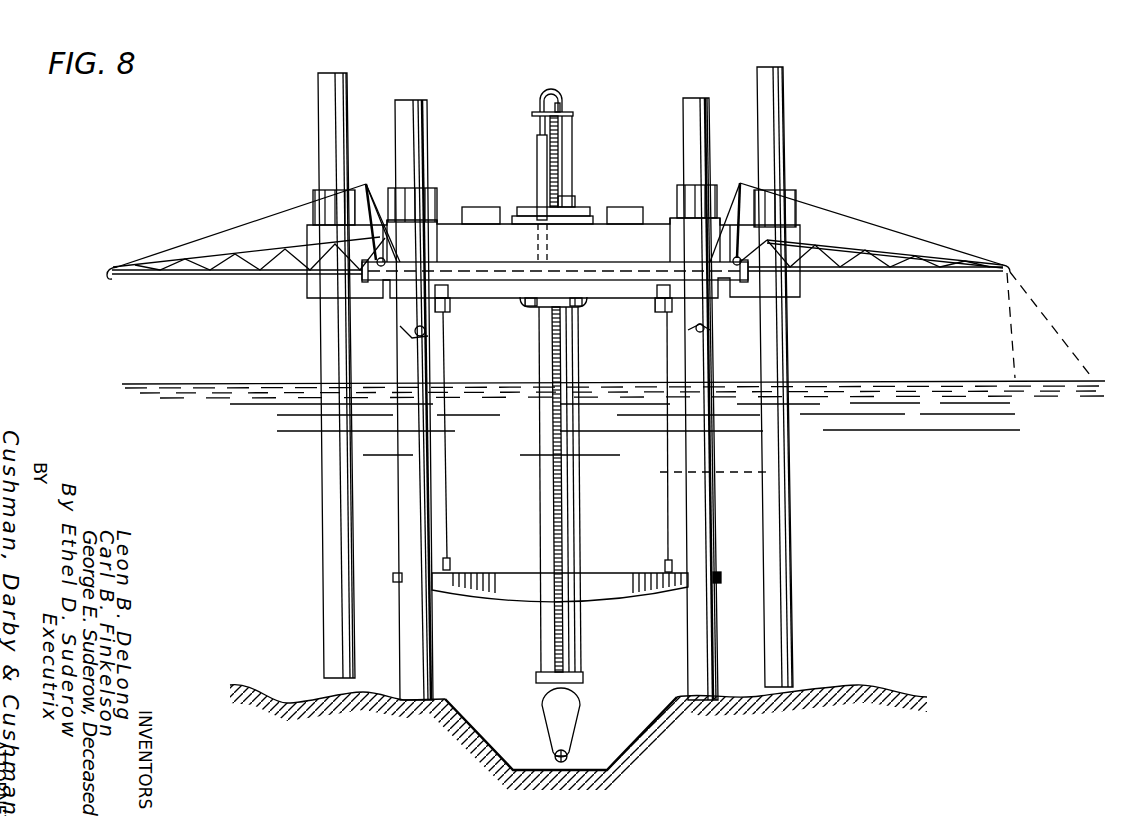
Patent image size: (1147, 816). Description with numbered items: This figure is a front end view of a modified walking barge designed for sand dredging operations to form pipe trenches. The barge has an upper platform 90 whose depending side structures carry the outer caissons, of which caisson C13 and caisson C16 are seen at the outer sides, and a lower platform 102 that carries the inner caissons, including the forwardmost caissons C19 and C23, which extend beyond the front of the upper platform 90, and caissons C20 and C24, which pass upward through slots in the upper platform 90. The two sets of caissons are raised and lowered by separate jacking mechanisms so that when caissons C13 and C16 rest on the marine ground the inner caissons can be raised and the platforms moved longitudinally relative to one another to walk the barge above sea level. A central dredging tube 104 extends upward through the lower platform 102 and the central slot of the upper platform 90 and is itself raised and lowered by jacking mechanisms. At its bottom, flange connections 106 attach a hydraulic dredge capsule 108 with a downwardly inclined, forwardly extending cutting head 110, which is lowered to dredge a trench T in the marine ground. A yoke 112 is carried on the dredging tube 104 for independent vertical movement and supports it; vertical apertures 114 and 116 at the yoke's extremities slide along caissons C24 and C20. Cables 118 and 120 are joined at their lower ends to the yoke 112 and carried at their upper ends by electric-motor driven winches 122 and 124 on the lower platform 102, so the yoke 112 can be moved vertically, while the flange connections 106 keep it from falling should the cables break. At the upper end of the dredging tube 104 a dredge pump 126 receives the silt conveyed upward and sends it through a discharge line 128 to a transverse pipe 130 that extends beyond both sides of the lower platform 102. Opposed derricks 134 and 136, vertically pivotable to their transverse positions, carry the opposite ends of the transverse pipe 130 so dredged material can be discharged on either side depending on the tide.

The upper platform 90 is at (652, 226).
The lower platform 102 is at (795, 279).
The central dredging tube 104 is at (570, 648).
The flange connections 106 is at (612, 492).
The hydraulic dredge capsule 108 is at (583, 695).
The cutting head 110 is at (565, 735).
The yoke 112 is at (600, 575).
The vertical aperture 114 is at (398, 583).
The vertical aperture 116 is at (712, 575).
The cable 118 is at (446, 497).
The cable 120 is at (668, 462).
The electric-motor driven winch 122 is at (452, 302).
The electric-motor driven winch 124 is at (650, 311).
The dredge pump 126 is at (543, 168).
The discharge line 128 is at (545, 112).
The transverse pipe 130 is at (280, 275).
The derrick 134 is at (915, 263).
The derrick 136 is at (210, 268).
The caisson C13 is at (782, 560).
The caisson C16 is at (330, 590).
The caisson C19 is at (706, 318).
The caisson C20 is at (712, 645).
The caisson C23 is at (408, 330).
The caisson C24 is at (428, 640).
The trench T is at (485, 738).